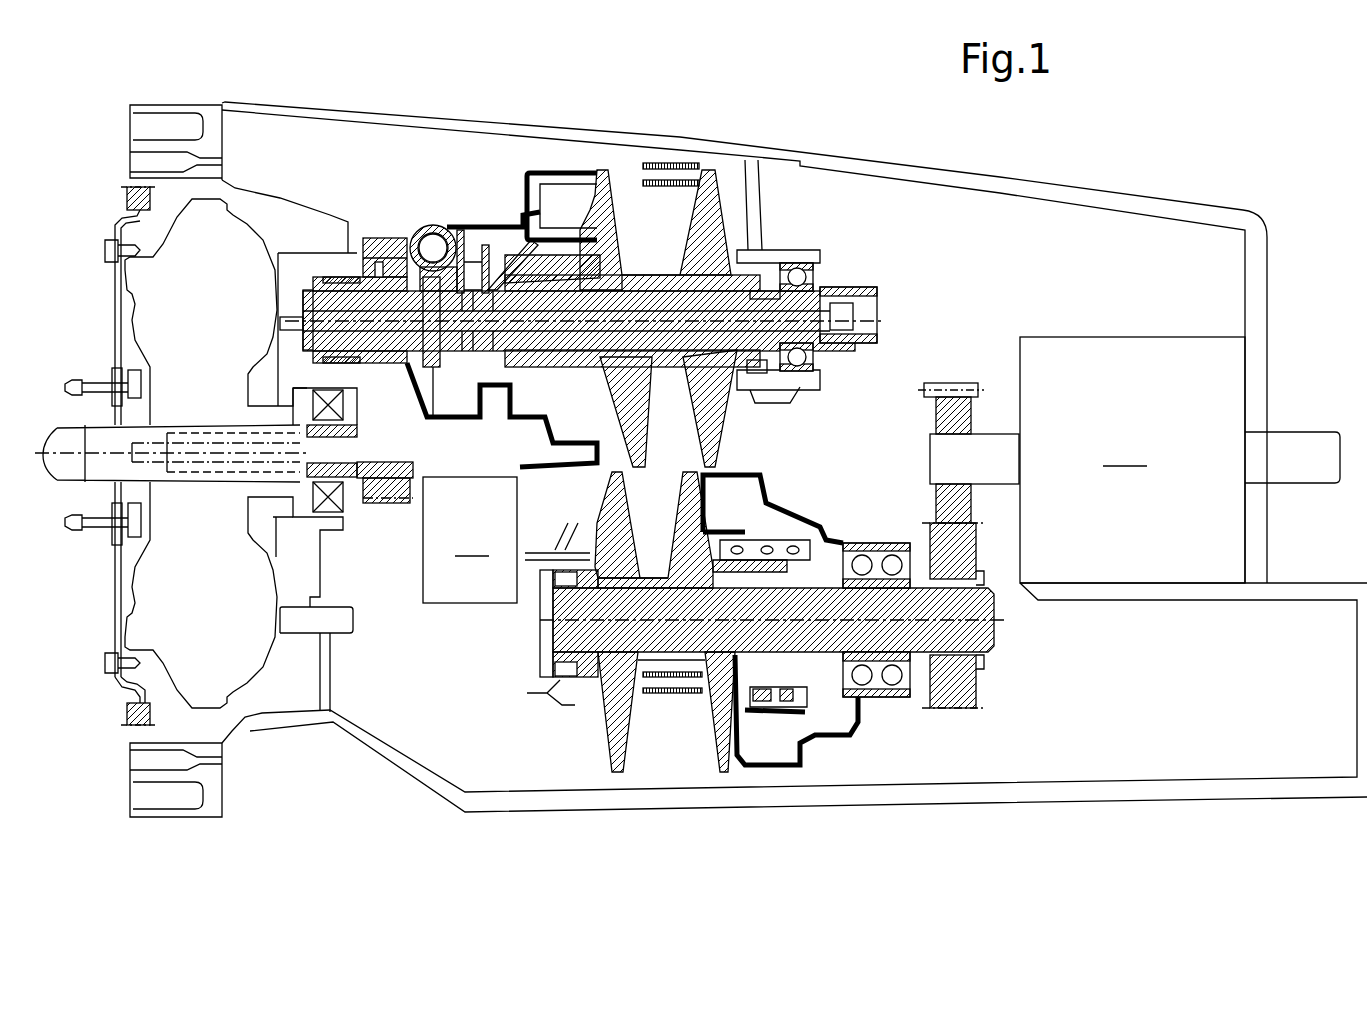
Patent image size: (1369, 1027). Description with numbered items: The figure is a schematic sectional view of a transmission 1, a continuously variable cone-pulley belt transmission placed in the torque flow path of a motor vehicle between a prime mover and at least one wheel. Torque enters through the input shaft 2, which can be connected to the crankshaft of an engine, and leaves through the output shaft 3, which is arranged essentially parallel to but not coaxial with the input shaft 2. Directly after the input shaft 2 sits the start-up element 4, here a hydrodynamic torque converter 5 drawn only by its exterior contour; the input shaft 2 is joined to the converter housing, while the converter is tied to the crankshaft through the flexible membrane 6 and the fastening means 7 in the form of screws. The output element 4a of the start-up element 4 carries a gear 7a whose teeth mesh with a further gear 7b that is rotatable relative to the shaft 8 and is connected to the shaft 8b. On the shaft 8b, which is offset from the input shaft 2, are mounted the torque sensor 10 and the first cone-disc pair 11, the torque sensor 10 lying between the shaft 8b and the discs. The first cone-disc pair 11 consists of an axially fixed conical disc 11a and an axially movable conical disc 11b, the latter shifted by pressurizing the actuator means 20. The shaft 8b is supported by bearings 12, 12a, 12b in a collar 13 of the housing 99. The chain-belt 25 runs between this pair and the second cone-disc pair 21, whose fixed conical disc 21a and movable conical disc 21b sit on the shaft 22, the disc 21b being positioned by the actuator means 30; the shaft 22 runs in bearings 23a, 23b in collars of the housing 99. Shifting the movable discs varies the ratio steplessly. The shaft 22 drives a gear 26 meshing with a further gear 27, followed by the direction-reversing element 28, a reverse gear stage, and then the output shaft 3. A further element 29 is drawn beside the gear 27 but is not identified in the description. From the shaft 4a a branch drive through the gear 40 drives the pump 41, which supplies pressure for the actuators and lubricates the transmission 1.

The transmission 1 is at (845, 135).
The input shaft 2 is at (70, 437).
The output shaft 3 is at (1325, 432).
The start-up element 4 is at (210, 304).
The output element of the start-up element 4a is at (380, 493).
The hydrodynamic torque converter 5 is at (125, 705).
The flexible membrane 6 is at (117, 298).
The fastening means 7 is at (102, 382).
The gear 7a is at (400, 484).
The further gear 7b is at (385, 252).
The shaft 8 is at (355, 320).
The shaft 8b is at (843, 320).
The torque sensor 10 is at (448, 209).
The first cone-disc pair 11 is at (650, 118).
The axially fixed conical disc 11a is at (720, 185).
The axially movable conical disc 11b is at (598, 215).
The bearing 12 is at (817, 278).
The bearing 12a is at (750, 360).
The bearing 12b is at (331, 277).
The collar 13 is at (778, 253).
The actuator means 20 is at (488, 204).
The second cone-disc pair 21 is at (668, 765).
The axially fixed conical disc 21a is at (613, 745).
The axially movable conical disc 21b is at (728, 772).
The shaft 22 is at (980, 622).
The bearing 23a is at (570, 670).
The bearing 23b is at (875, 548).
The chain-belt 25 is at (680, 178).
The gear 26 is at (953, 690).
The further gear 27 is at (955, 390).
The direction-reversing element 28 is at (1132, 460).
The coupling 29 is at (990, 449).
The actuator means 30 is at (827, 745).
The gear 40 is at (430, 437).
The pump 41 is at (470, 540).
The housing 99 is at (1043, 193).